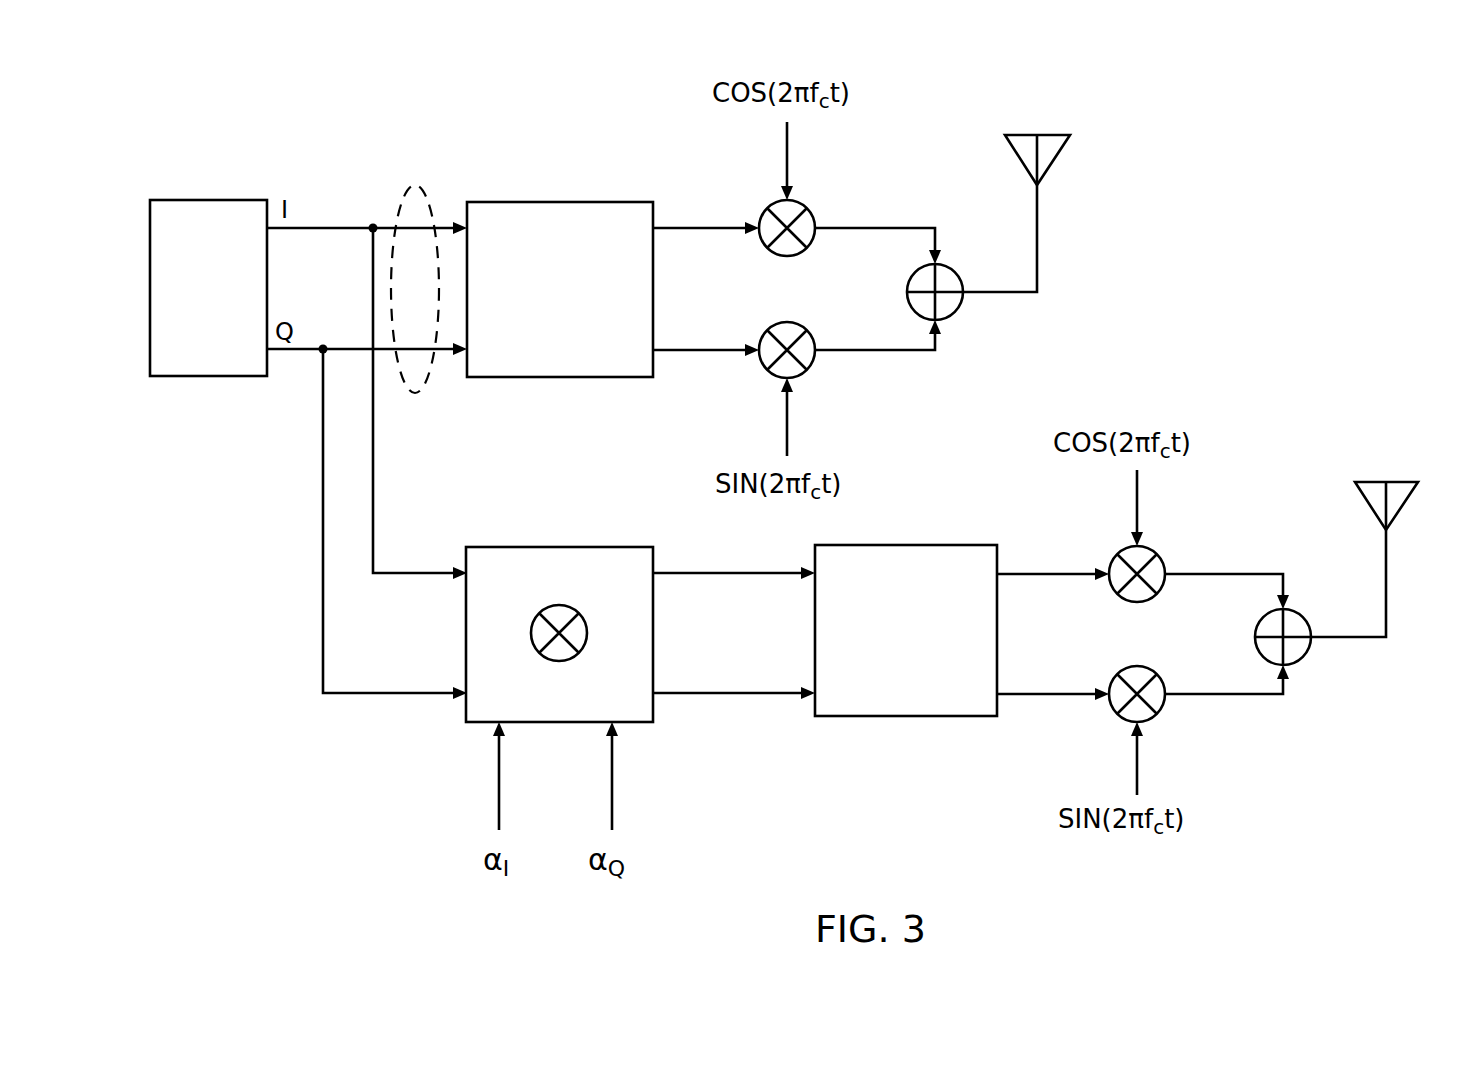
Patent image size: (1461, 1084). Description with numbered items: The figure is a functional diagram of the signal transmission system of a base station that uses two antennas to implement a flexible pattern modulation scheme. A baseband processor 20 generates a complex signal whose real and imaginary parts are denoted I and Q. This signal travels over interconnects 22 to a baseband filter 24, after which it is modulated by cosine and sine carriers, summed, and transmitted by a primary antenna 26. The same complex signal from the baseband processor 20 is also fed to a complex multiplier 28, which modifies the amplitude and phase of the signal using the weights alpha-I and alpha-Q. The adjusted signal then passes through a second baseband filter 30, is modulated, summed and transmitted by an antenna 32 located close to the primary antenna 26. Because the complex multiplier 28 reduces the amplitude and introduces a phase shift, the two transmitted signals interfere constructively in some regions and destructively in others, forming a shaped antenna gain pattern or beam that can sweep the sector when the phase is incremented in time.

The baseband processor 20 is at (208, 200).
The interconnects 22 is at (415, 186).
The baseband filter 24 is at (593, 202).
The primary antenna 26 is at (1050, 162).
The complex multiplier 28 is at (593, 547).
The baseband filter 30 is at (937, 545).
The antenna 32 is at (1400, 508).